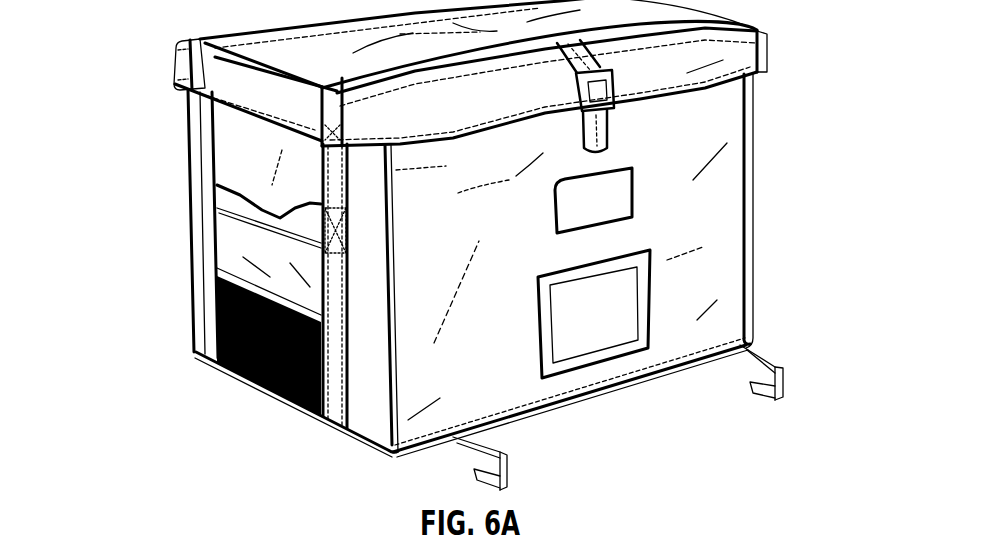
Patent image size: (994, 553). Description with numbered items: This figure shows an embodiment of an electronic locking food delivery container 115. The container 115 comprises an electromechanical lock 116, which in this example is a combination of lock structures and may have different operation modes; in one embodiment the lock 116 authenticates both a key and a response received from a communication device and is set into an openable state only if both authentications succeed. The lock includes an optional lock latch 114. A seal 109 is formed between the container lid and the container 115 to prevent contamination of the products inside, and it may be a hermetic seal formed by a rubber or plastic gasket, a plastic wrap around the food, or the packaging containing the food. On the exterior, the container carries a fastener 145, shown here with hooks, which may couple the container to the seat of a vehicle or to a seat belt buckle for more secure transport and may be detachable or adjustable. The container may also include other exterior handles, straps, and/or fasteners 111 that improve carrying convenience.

The seal 109 is at (471, 228).
The fasteners 111 is at (228, 229).
The lock latch 114 is at (627, 79).
The container 115 is at (799, 37).
The electromechanical lock 116 is at (621, 196).
The fastener 145 is at (521, 460).